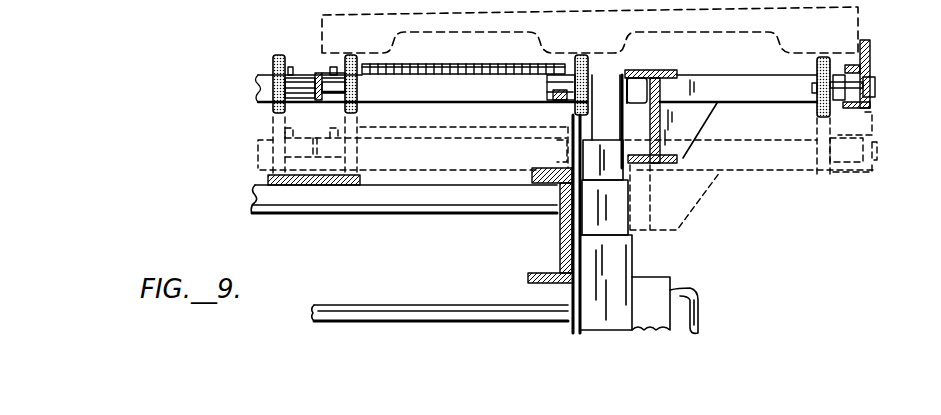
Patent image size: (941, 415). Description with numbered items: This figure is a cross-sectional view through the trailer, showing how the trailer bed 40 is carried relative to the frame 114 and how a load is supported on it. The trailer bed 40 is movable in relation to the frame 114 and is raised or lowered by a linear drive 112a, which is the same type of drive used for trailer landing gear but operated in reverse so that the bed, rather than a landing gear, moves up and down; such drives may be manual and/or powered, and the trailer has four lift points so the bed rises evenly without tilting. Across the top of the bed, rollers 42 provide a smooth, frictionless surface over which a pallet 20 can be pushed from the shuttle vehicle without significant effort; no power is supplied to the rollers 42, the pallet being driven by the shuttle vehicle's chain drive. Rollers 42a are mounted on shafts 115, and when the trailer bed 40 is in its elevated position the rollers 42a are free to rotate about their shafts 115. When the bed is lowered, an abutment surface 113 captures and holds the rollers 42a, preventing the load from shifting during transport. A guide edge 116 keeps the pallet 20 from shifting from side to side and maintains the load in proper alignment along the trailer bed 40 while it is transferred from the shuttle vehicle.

The pallet 20 is at (322, 36).
The rollers 42a is at (270, 65).
The rollers 42 is at (590, 63).
The shafts 115 is at (335, 100).
The guide edge 116 is at (870, 52).
The trailer bed 40 is at (871, 74).
The abutment surface 113 is at (270, 176).
The frame 114 is at (558, 244).
The linear drive 112a is at (625, 257).